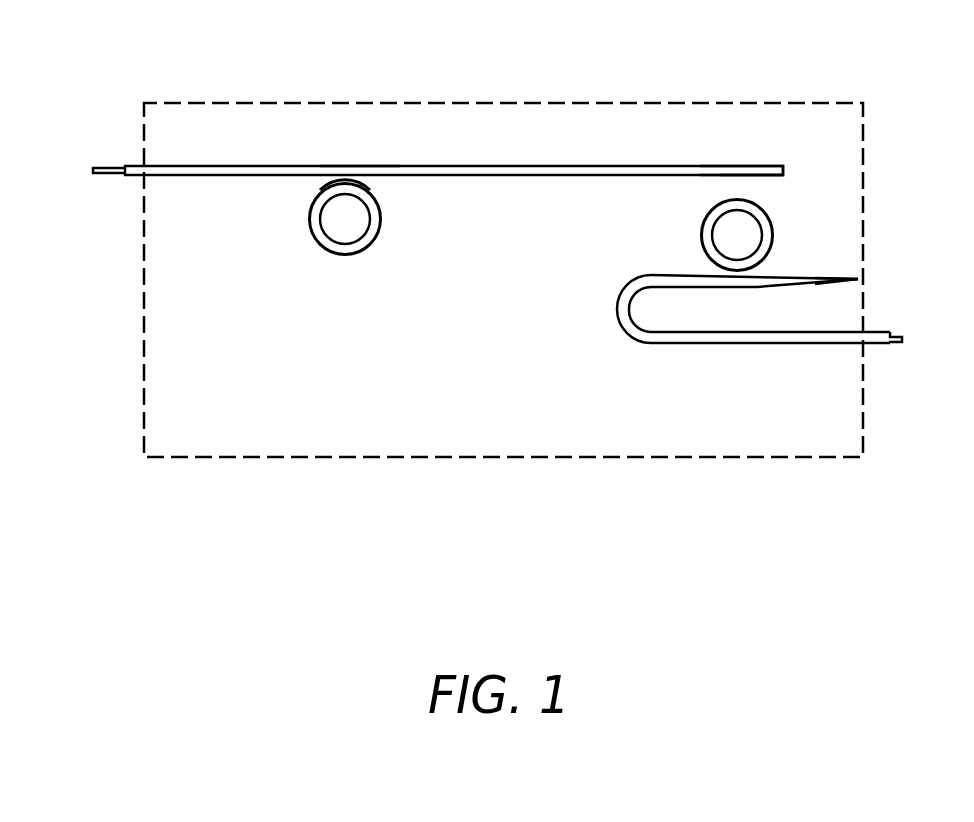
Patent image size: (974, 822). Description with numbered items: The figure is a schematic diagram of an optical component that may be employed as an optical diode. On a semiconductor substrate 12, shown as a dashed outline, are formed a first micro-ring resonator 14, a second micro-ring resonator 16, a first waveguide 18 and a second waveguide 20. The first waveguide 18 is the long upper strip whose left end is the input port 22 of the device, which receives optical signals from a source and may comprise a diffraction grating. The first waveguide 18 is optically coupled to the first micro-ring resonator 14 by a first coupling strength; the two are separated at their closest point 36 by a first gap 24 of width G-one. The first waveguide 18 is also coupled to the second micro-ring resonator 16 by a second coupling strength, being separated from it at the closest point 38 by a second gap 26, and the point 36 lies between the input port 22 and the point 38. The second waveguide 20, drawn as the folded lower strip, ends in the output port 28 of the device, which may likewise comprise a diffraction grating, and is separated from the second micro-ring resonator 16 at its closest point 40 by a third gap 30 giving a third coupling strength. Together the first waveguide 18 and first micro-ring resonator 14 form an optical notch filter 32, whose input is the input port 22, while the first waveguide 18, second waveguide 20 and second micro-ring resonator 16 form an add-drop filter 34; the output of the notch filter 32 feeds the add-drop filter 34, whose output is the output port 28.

The semiconductor substrate 12 is at (622, 103).
The first micro-ring resonator 14 is at (365, 250).
The second micro-ring resonator 16 is at (770, 213).
The first waveguide 18 is at (455, 165).
The second waveguide 20 is at (738, 345).
The input port 22 is at (143, 164).
The first gap 24 is at (327, 182).
The second gap 26 is at (747, 188).
The output port 28 is at (895, 333).
The third gap 30 is at (742, 272).
The optical notch filter 32 is at (257, 239).
The add-drop filter 34 is at (603, 240).
The closest point 36 is at (342, 165).
The closest point 38 is at (744, 165).
The closest point 40 is at (737, 287).